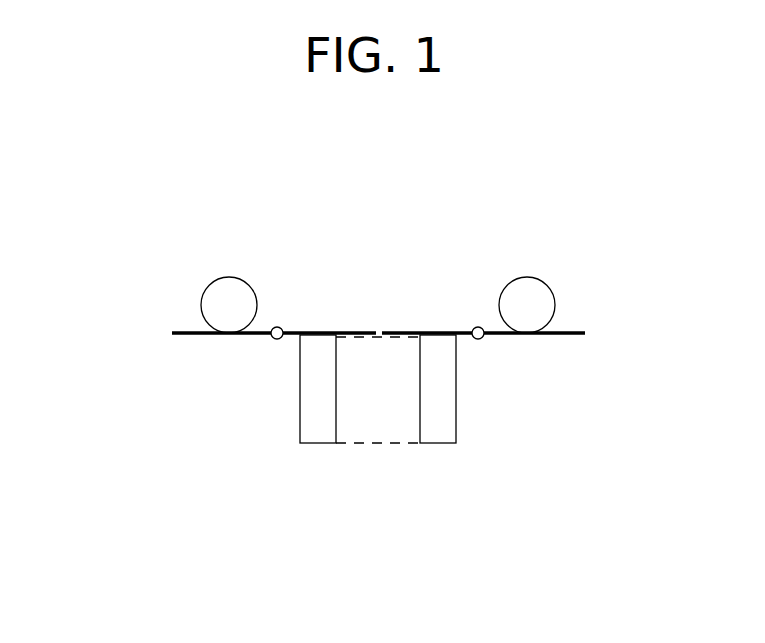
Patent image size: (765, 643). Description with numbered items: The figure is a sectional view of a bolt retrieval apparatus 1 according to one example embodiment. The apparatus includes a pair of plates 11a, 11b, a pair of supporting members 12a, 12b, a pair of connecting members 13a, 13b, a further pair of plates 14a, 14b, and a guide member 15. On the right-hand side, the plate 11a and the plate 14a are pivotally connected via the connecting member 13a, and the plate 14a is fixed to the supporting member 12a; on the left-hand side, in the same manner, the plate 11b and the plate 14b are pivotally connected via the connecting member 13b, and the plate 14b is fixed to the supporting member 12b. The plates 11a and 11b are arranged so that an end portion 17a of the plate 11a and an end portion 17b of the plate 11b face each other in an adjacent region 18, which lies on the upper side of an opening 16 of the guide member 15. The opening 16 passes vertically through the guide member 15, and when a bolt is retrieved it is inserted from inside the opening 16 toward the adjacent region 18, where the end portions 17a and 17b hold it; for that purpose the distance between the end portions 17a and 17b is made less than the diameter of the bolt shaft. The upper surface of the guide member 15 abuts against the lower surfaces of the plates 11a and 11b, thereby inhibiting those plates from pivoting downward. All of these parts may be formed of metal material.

The bolt retrieval apparatus 1 is at (486, 140).
The plate 11a is at (440, 333).
The plate 11b is at (323, 333).
The supporting member 12a is at (529, 277).
The supporting member 12b is at (228, 277).
The connecting member 13a is at (483, 339).
The connecting member 13b is at (272, 339).
The plate 14a is at (570, 333).
The plate 14b is at (185, 333).
The guide member 15 is at (445, 443).
The opening 16 is at (364, 459).
The end portion 17a is at (384, 333).
The end portion 17b is at (373, 333).
The adjacent region 18 is at (378, 347).